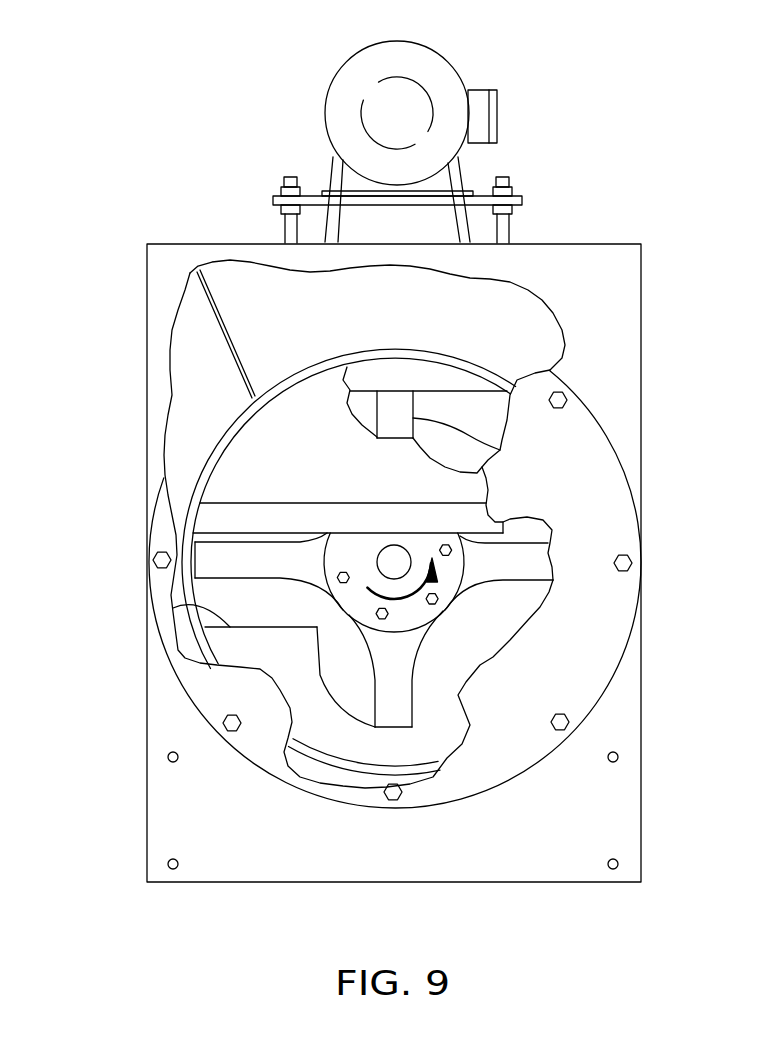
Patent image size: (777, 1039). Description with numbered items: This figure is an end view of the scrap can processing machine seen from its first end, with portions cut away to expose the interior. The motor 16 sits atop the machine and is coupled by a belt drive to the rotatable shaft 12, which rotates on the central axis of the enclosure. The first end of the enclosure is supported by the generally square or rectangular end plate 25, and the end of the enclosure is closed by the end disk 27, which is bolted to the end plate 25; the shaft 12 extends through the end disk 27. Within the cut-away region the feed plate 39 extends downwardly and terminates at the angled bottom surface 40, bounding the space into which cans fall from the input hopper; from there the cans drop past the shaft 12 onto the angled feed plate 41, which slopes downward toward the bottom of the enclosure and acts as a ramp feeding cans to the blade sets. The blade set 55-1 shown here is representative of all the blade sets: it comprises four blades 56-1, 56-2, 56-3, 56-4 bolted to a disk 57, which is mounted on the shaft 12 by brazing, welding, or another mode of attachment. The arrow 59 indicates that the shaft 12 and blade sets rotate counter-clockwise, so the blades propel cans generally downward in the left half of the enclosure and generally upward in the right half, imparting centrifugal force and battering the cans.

The motor 16 is at (353, 63).
The end plate 25 is at (640, 815).
The end disk 27 is at (618, 494).
The feed plate 39 is at (328, 468).
The angled bottom surface 40 is at (258, 513).
The angled feed plate 41 is at (215, 610).
The rotatable shaft 12 is at (389, 546).
The blade 56-1 is at (412, 698).
The blade 56-2 is at (220, 532).
The blade 56-3 is at (497, 448).
The blade 56-4 is at (533, 580).
The disk 57 is at (400, 628).
The arrow 59 is at (430, 577).
The blade set 55-1 is at (357, 610).